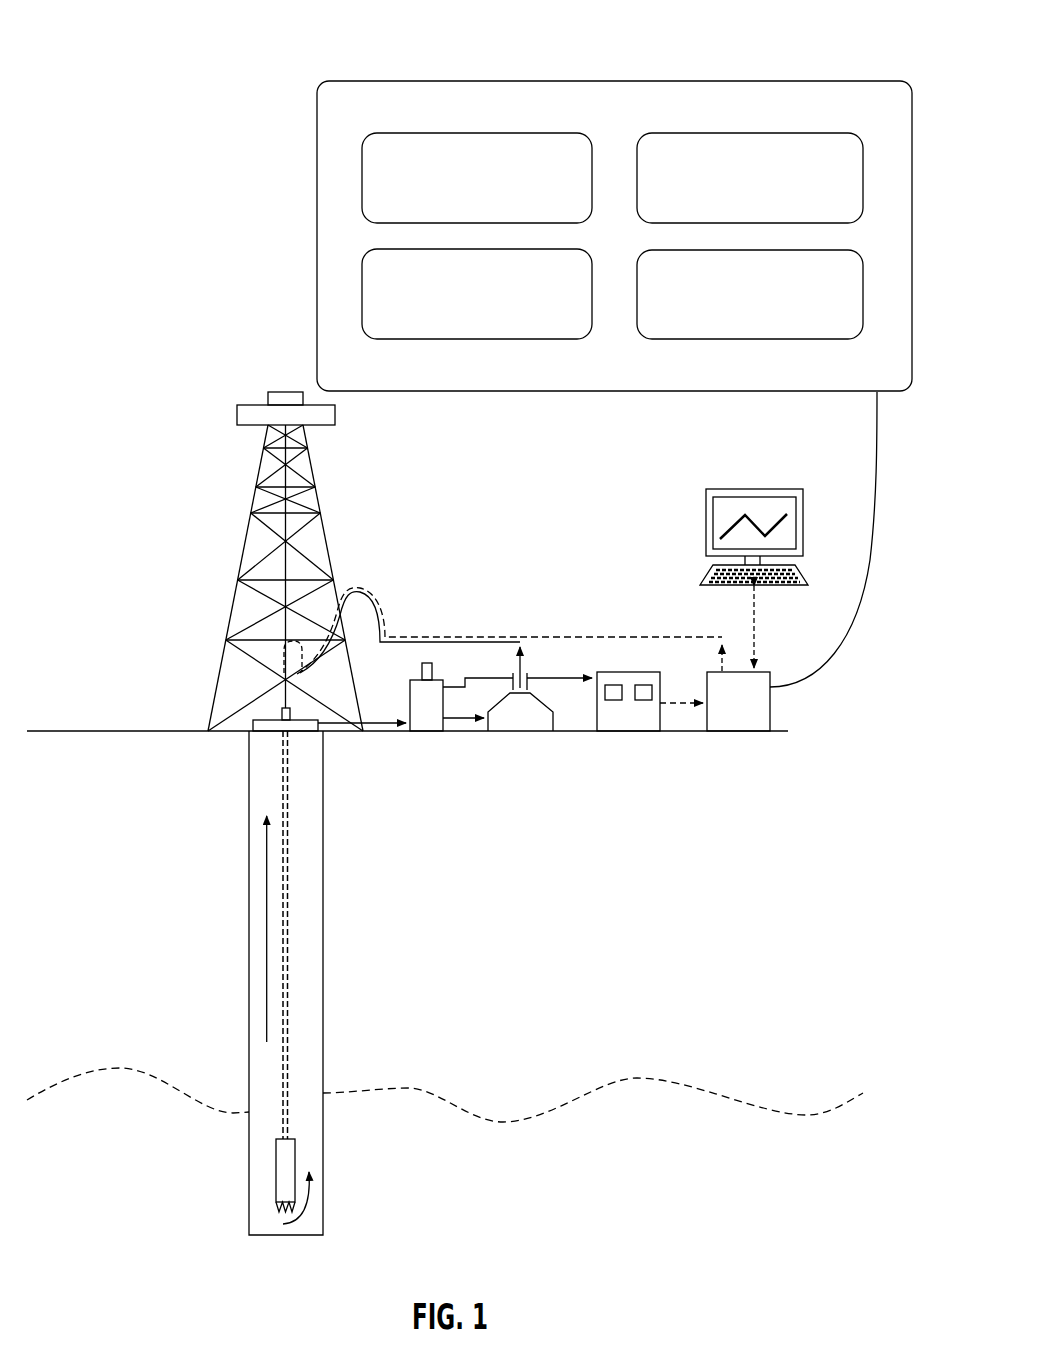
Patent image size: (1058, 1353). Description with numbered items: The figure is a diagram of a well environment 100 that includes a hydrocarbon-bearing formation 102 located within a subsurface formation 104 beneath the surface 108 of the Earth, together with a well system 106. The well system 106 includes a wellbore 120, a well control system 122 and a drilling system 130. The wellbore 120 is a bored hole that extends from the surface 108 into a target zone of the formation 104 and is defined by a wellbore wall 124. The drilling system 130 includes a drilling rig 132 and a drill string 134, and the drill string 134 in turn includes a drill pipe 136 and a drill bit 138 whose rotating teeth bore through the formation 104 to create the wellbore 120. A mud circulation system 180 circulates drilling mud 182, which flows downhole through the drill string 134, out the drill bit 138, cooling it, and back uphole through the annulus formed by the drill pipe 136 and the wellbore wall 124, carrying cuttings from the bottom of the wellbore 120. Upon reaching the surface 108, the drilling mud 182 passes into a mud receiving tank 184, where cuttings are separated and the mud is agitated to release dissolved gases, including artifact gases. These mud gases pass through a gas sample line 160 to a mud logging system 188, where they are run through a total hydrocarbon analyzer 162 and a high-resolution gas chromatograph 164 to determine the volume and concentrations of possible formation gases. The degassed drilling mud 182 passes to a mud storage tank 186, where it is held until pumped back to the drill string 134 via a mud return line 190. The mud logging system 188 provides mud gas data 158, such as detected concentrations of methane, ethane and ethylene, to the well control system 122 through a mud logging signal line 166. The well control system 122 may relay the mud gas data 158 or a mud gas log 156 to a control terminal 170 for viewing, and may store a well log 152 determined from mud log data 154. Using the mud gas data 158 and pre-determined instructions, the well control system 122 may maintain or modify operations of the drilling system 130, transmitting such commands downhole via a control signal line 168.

The well environment 100 is at (105, 13).
The hydrocarbon-bearing formation 102 is at (658, 1171).
The subsurface formation 104 is at (658, 1021).
The well system 106 is at (160, 390).
The surface 108 is at (132, 730).
The wellbore 120 is at (269, 1073).
The well control system 122 is at (619, 418).
The wellbore wall 124 is at (323, 978).
The drilling system 130 is at (199, 466).
The drilling rig 132 is at (323, 527).
The drill string 134 is at (275, 1170).
The drill pipe 136 is at (287, 927).
The drill bit 138 is at (275, 1205).
The well log 152 is at (498, 191).
The mud log data 154 is at (771, 191).
The mud gas log 156 is at (498, 307).
The mud gas data 158 is at (771, 307).
The gas sample line 160 is at (548, 678).
The total hydrocarbon analyzer 162 is at (613, 702).
The high-resolution gas chromatograph 164 is at (643, 702).
The mud logging signal line 166 is at (682, 705).
The control signal line 168 is at (625, 637).
The control terminal 170 is at (760, 489).
The mud circulation system 180 is at (545, 555).
The drilling mud 182 is at (265, 917).
The mud receiving tank 184 is at (424, 720).
The mud storage tank 186 is at (518, 720).
The mud logging system 188 is at (628, 752).
The mud return line 190 is at (428, 635).